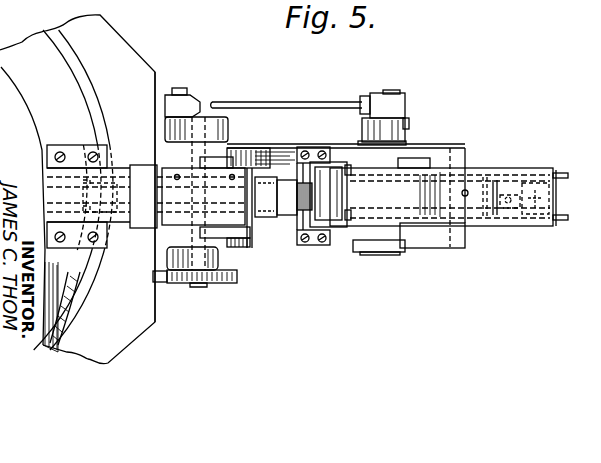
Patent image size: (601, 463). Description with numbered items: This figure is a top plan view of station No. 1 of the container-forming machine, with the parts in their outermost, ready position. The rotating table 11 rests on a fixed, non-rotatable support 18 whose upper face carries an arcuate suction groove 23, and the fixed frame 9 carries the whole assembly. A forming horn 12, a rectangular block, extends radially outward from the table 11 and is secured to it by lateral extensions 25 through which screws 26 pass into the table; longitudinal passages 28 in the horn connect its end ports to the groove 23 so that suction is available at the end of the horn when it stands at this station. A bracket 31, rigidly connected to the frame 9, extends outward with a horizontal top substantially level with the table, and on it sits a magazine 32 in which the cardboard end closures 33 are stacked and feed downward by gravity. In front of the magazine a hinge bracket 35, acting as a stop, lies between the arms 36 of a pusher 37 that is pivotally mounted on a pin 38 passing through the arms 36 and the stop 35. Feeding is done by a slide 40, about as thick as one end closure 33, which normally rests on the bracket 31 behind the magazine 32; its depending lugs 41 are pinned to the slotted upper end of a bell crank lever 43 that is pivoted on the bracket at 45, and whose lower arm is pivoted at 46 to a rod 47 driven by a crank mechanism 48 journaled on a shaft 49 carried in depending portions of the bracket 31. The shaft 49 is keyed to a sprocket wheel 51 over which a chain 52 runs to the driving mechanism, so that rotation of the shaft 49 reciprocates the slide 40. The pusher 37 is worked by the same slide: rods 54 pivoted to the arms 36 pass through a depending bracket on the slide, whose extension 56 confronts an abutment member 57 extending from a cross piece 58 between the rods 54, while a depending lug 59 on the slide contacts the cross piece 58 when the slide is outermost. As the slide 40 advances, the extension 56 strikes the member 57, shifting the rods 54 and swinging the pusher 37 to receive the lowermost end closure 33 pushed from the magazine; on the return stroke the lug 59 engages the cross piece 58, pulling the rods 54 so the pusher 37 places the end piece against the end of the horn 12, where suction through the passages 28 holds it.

The station No. 1 is at (238, 79).
The fixed frame 9 is at (128, 347).
The table 11 is at (82, 108).
The forming horn 12 is at (187, 193).
The support 18 is at (43, 343).
The arcuate groove 23 is at (63, 300).
The lateral extensions 25 is at (72, 146).
The screws 26 is at (96, 156).
The longitudinal passages 28 is at (100, 202).
The bracket 31 is at (418, 248).
The magazine 32 is at (335, 236).
The end closures 33 is at (337, 160).
The hinge bracket 35 is at (283, 193).
The arms 36 is at (275, 214).
The pusher 37 is at (250, 248).
The pin 38 is at (257, 244).
The slide 40 is at (440, 186).
The depending lugs 41 is at (411, 250).
The bell crank lever 43 is at (362, 230).
The pivotal connection 45 is at (412, 123).
The pivotal connection 46 is at (402, 93).
The rod 47 is at (317, 103).
The crank mechanism 48 is at (229, 123).
The shaft 49 is at (206, 152).
The sprocket wheel 51 is at (207, 287).
The chain 52 is at (133, 287).
The rods 54 is at (566, 218).
The extension 56 is at (533, 218).
The abutment member 57 is at (508, 208).
The cross piece 58 is at (484, 193).
The depending lug 59 is at (466, 190).